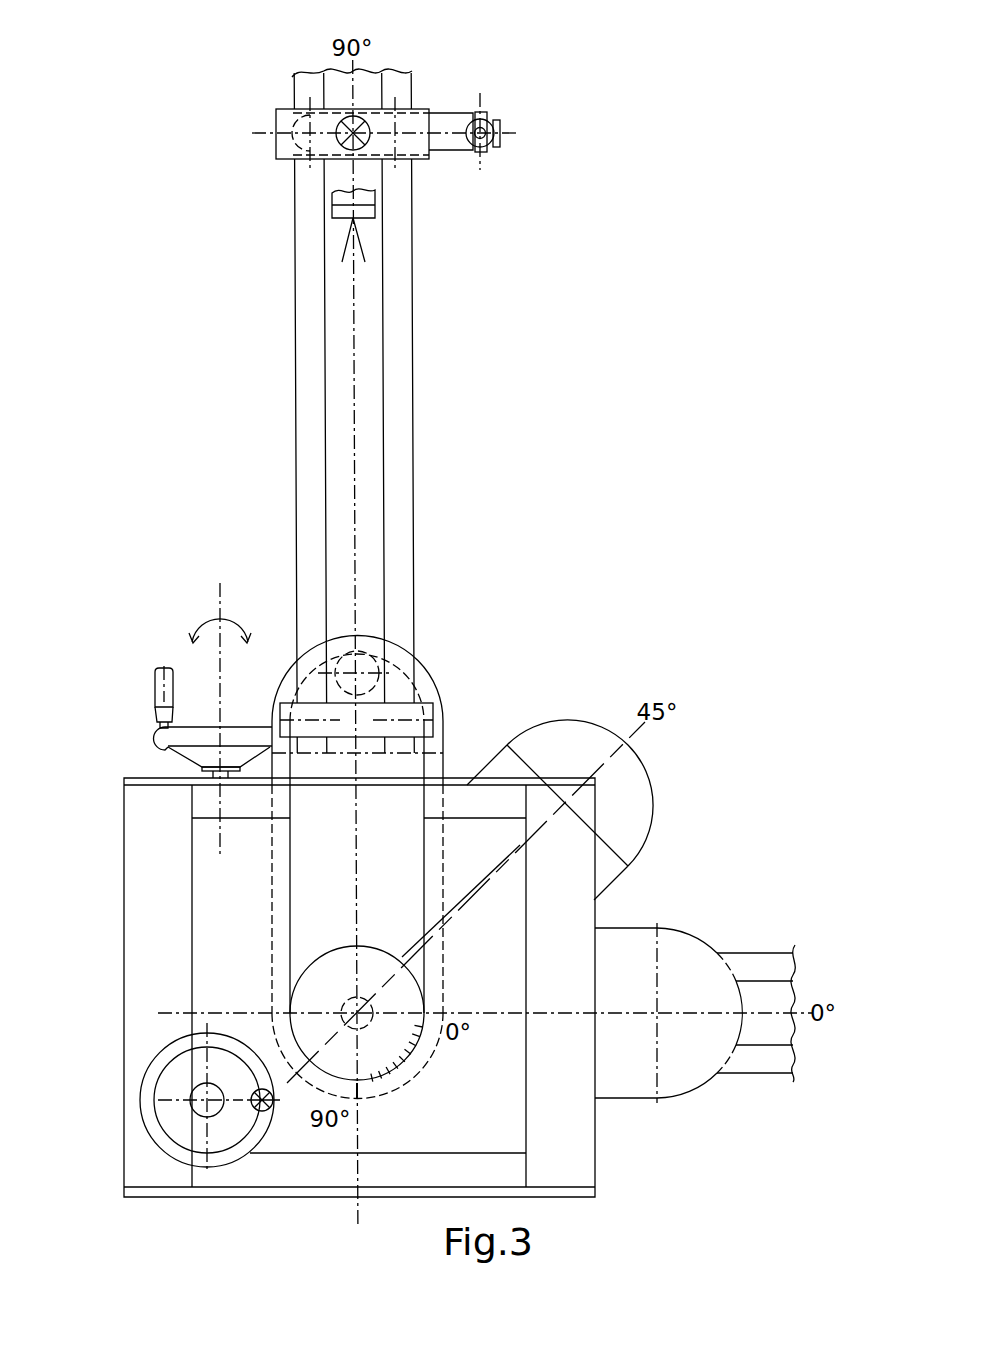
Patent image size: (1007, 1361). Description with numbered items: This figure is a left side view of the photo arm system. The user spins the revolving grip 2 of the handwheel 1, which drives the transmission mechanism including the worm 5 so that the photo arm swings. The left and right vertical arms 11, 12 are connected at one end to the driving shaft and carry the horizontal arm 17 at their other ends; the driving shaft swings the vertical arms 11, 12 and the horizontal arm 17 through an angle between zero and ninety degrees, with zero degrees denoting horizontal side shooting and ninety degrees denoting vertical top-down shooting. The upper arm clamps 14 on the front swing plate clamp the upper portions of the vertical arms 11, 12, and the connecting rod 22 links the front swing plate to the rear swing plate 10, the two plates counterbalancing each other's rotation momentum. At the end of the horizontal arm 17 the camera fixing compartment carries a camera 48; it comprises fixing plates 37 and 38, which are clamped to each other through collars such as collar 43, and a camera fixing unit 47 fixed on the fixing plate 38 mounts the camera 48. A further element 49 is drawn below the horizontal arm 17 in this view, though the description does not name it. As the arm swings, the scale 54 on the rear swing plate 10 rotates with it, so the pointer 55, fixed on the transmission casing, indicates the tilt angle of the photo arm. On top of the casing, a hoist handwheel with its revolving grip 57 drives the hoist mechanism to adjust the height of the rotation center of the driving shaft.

The handwheel 1 is at (157, 1068).
The revolving grip 2 is at (265, 1111).
The worm 5 is at (196, 1113).
The rear swing plate 10 is at (433, 679).
The vertical arm 11 is at (297, 413).
The vertical arm 12 is at (414, 413).
The upper arm clamp 14 is at (433, 713).
The horizontal arm 17 is at (370, 141).
The connecting rod 22 is at (378, 663).
The fixing plate 37 is at (276, 150).
The fixing plate 38 is at (487, 152).
The collar 43 is at (497, 121).
The camera fixing unit 47 is at (447, 113).
The camera 48 is at (293, 126).
The laser unit 49 is at (377, 201).
The scale 54 is at (415, 996).
The pointer 55 is at (358, 1092).
The revolving grip 57 is at (158, 676).